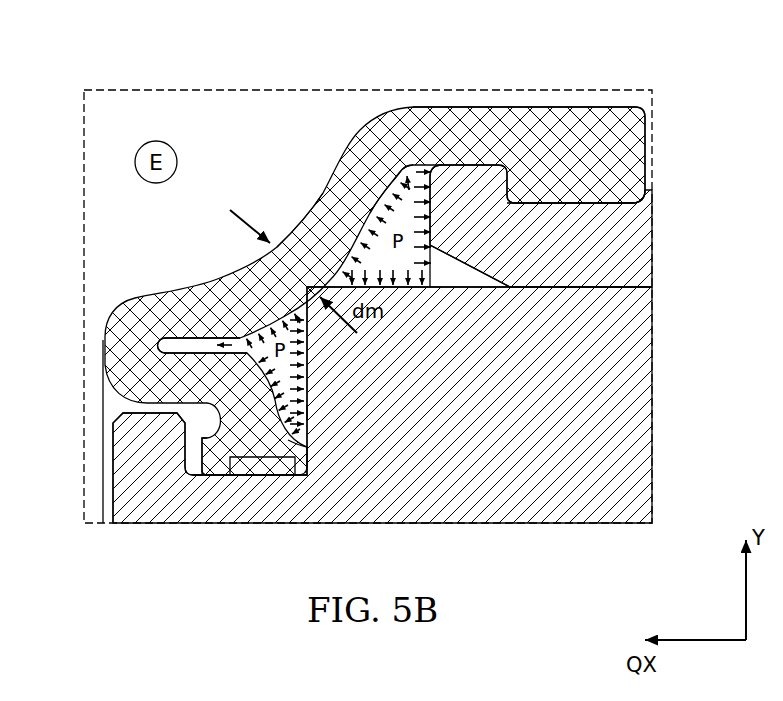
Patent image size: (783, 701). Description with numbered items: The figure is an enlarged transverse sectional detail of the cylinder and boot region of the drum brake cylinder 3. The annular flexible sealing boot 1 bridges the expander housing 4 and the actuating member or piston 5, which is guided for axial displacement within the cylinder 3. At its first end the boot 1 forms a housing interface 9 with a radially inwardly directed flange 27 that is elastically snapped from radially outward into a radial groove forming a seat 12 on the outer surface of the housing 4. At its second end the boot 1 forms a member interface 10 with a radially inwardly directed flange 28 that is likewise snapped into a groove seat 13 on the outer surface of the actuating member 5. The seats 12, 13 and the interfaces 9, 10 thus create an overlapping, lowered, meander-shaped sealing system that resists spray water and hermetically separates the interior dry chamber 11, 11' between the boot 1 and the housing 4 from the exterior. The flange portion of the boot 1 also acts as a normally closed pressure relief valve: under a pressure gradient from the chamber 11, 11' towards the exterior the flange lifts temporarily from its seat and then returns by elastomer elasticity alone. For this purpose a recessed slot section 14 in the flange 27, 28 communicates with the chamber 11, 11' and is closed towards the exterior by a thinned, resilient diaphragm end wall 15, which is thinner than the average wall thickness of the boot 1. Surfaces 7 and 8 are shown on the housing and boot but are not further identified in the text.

The sealing boot 1 is at (306, 164).
The cylinder 3 is at (610, 264).
The expander housing 4 is at (566, 251).
The actuating member (piston) 5 is at (580, 337).
The sealing surface 7 is at (636, 289).
The sealing lip 8 is at (322, 230).
The housing interface 9 is at (540, 107).
The member interface 10 is at (198, 458).
The dry chamber 11 is at (202, 290).
The dry chamber 11' is at (382, 127).
The seat 12 is at (632, 204).
The seat 13 is at (282, 470).
The recessed slot section 14 is at (309, 442).
The diaphragm end wall 15 is at (213, 465).
The radially inwardly directed flange 27 is at (608, 140).
The radially inwardly directed flange 28 is at (309, 414).